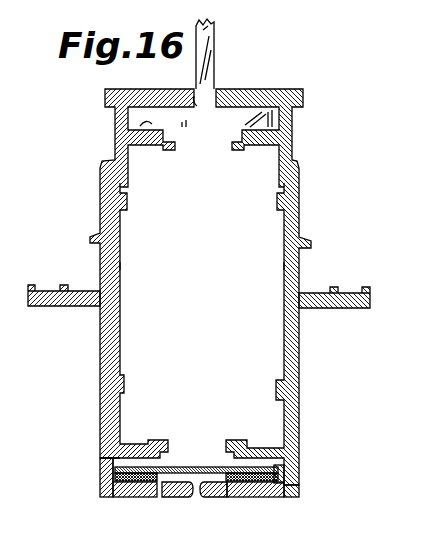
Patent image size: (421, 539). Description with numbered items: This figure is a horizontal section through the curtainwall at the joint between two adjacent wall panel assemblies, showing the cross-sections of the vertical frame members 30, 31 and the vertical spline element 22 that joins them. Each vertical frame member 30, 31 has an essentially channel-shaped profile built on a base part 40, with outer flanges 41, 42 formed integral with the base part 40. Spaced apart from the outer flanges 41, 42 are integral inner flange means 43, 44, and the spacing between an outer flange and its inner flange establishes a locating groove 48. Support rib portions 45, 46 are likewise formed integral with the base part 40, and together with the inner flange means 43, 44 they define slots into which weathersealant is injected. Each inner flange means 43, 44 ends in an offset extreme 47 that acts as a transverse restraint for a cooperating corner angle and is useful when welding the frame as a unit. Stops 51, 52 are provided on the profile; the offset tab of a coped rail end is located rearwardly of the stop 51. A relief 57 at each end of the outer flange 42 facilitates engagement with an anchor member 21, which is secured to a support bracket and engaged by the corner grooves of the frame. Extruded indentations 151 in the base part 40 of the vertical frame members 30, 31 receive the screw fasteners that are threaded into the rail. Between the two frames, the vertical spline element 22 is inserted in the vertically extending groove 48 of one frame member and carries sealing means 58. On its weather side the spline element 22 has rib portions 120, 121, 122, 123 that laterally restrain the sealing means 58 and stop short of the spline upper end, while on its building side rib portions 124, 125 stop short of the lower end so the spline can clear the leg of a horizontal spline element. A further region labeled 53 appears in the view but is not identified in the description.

The anchor member 21 is at (216, 62).
The vertical spline element 22 is at (197, 467).
The vertical frame member 30 is at (100, 415).
The vertical frame member 31 is at (299, 470).
The base part 40 is at (100, 325).
The outer flange 41 is at (138, 497).
The outer flange 42 is at (152, 89).
The inner flange means 43 is at (128, 444).
The inner flange means 44 is at (137, 148).
The support rib portion 45 is at (124, 382).
The support rib portion 46 is at (127, 204).
The offset extreme 47 is at (170, 150).
The locating groove 48 is at (152, 461).
The stop 51 is at (48, 306).
The stop 52 is at (90, 237).
The chamber 53 is at (115, 128).
The relief 57 is at (195, 97).
The sealing means 58 is at (127, 482).
The rib portion 120 is at (100, 488).
The rib portion 121 is at (162, 497).
The rib portion 122 is at (213, 497).
The rib portion 123 is at (299, 488).
The rib portion 124 is at (283, 466).
The rib portion 125 is at (113, 458).
The extruded indentation 151 is at (121, 184).